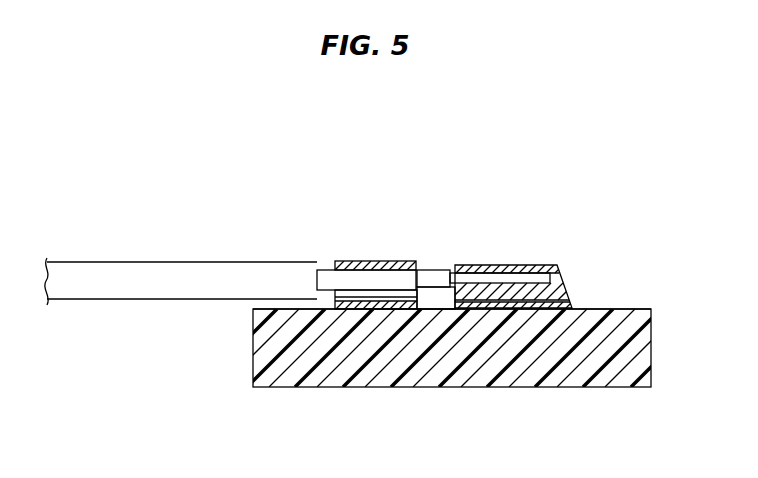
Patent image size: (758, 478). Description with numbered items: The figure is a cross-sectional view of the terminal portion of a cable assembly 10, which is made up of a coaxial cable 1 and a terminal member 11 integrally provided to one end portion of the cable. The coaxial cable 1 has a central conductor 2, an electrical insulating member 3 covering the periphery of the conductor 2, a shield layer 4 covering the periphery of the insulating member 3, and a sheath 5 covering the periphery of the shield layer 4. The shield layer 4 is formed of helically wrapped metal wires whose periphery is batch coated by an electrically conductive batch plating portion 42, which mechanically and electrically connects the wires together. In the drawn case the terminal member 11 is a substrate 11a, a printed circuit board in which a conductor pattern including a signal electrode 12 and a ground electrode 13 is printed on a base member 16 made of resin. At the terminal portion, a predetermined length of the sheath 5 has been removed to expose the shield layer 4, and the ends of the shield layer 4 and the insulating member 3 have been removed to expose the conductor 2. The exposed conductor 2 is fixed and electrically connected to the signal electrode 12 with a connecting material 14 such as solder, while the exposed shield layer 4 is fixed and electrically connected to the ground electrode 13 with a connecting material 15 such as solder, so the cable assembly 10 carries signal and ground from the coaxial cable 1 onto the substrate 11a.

The cable assembly 10 is at (255, 160).
The coaxial cable 1 is at (67, 255).
The sheath 5 is at (155, 269).
The shield layer 4 is at (325, 269).
The batch plating portion 42 is at (360, 280).
The electrical insulating member 3 is at (435, 276).
The conductor 2 is at (517, 276).
The connecting material 14 is at (557, 265).
The signal electrode 12 is at (568, 299).
The connecting material 15 is at (390, 295).
The ground electrode 13 is at (363, 303).
The terminal member 11 is at (637, 237).
The substrate 11a is at (655, 300).
The base member 16 is at (580, 383).